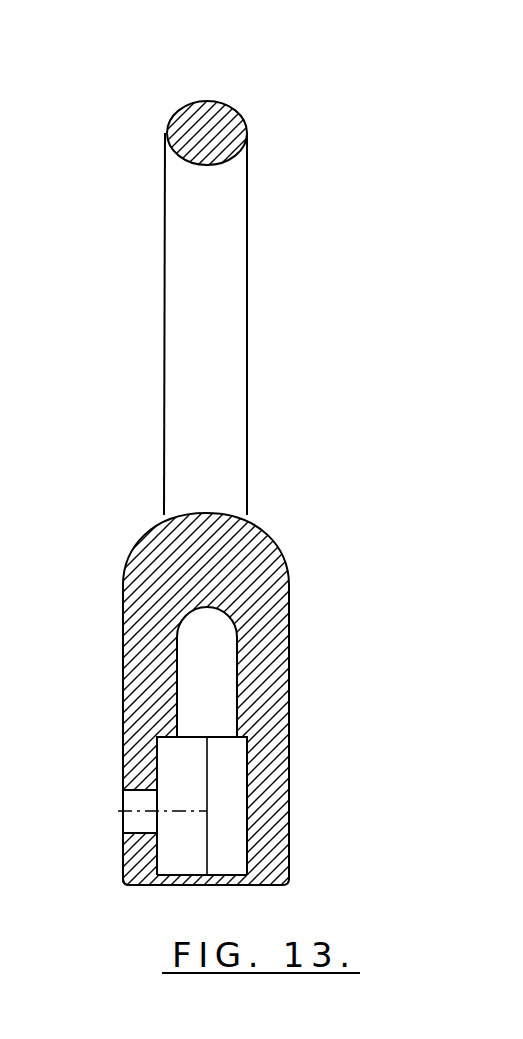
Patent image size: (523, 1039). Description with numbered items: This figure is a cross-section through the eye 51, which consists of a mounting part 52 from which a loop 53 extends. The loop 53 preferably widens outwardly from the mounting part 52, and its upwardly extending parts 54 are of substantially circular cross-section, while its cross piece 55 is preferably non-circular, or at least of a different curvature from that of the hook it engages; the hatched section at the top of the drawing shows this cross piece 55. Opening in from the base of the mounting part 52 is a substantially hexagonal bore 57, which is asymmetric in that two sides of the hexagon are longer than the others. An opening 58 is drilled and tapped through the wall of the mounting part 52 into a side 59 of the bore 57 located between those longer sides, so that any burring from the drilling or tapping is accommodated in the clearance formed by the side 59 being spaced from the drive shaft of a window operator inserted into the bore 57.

The eye 51 is at (246, 96).
The mounting part 52 is at (128, 660).
The loop 53 is at (250, 366).
The upwardly extending parts 54 is at (222, 420).
The cross piece 55 is at (192, 118).
The bore 57 is at (237, 804).
The opening 58 is at (135, 800).
The side 59 is at (153, 852).